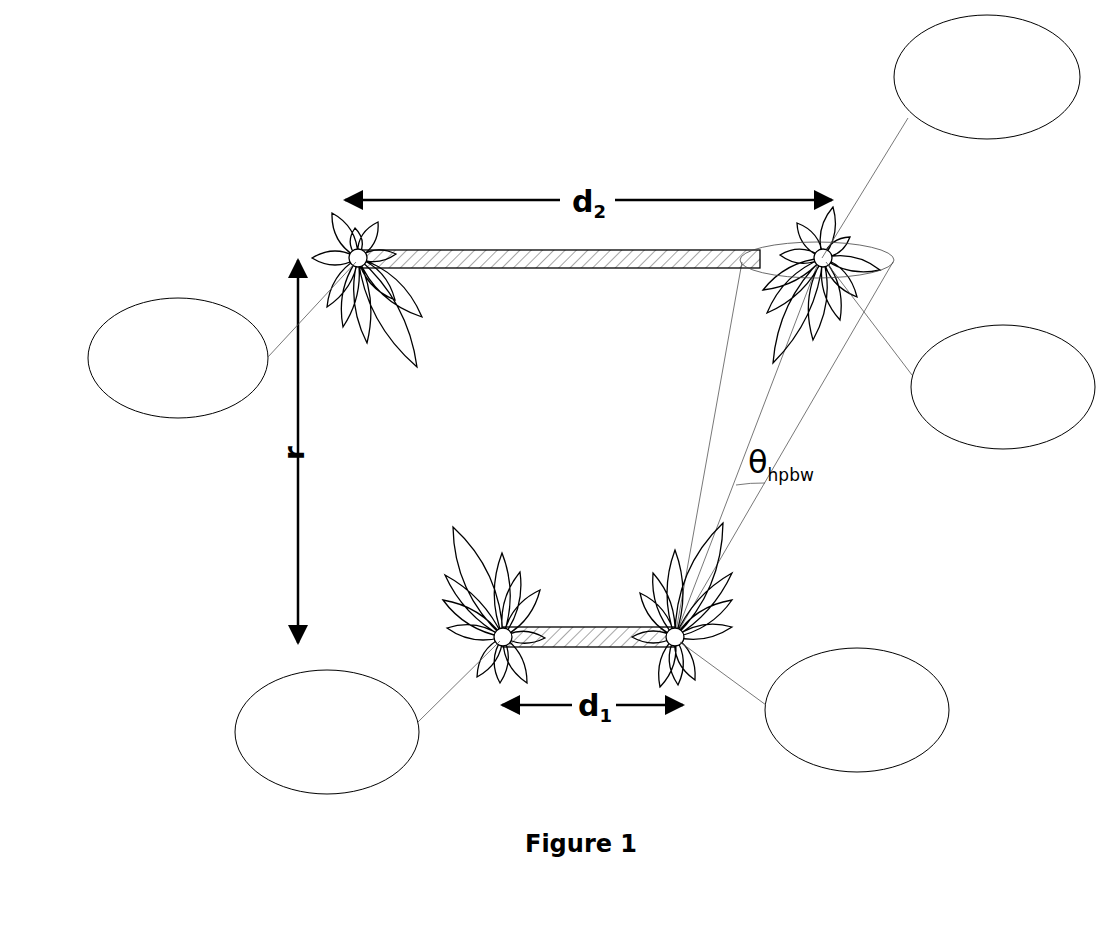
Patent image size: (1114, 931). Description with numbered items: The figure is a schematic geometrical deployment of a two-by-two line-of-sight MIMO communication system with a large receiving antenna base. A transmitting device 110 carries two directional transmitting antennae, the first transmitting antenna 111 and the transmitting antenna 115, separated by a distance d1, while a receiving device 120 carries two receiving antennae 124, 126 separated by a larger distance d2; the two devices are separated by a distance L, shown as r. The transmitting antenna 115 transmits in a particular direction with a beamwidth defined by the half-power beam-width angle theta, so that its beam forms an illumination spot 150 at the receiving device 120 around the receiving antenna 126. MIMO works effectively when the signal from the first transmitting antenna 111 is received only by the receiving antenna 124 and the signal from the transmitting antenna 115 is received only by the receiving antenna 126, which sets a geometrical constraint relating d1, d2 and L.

The transmitting device 110 is at (589, 608).
The TX antenna #1 111 is at (347, 660).
The transmitting antenna 115 is at (790, 647).
The receiving device 120 is at (560, 297).
The receiving antenna 124 is at (255, 315).
The receiving antenna 126 is at (929, 328).
The illumination spot 150 is at (910, 146).